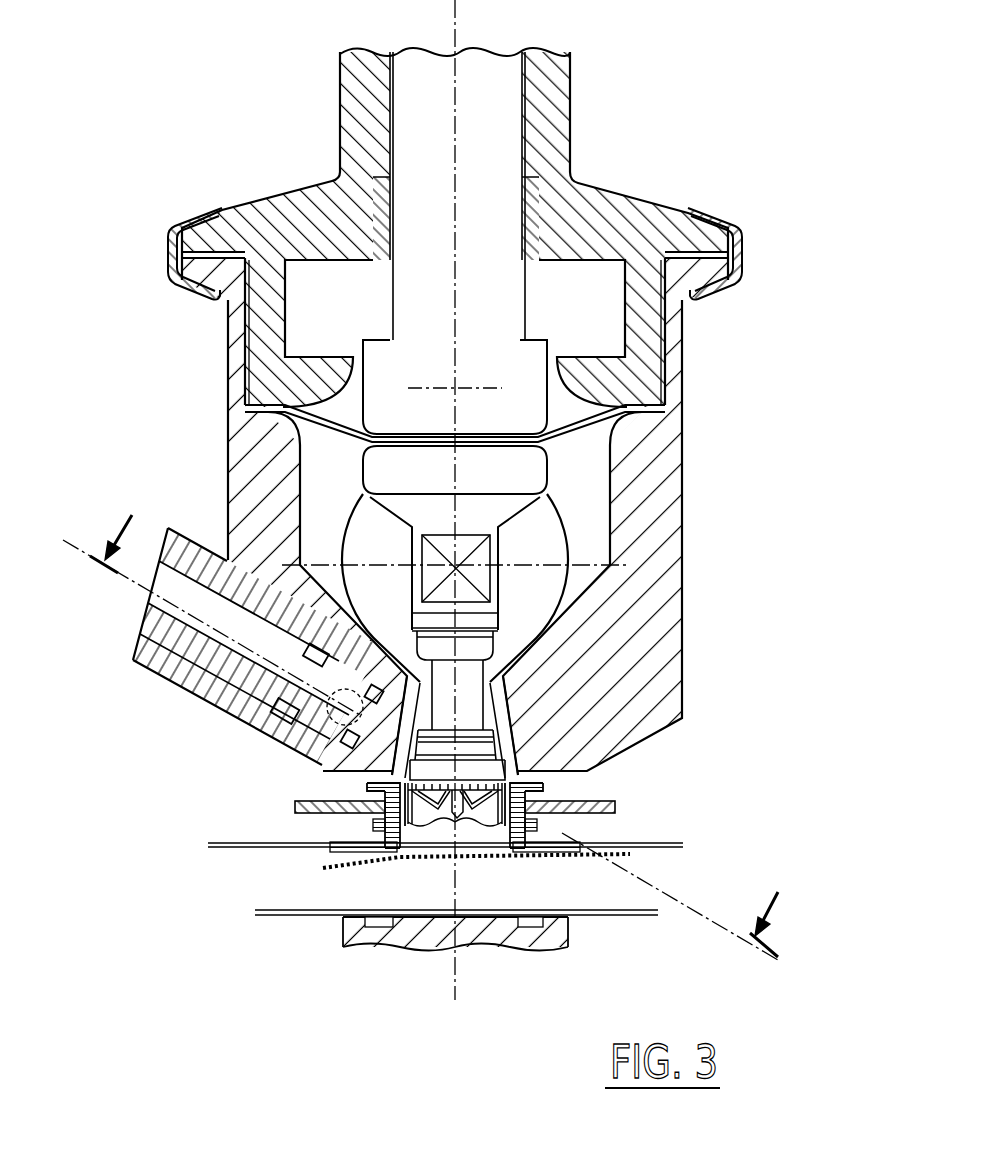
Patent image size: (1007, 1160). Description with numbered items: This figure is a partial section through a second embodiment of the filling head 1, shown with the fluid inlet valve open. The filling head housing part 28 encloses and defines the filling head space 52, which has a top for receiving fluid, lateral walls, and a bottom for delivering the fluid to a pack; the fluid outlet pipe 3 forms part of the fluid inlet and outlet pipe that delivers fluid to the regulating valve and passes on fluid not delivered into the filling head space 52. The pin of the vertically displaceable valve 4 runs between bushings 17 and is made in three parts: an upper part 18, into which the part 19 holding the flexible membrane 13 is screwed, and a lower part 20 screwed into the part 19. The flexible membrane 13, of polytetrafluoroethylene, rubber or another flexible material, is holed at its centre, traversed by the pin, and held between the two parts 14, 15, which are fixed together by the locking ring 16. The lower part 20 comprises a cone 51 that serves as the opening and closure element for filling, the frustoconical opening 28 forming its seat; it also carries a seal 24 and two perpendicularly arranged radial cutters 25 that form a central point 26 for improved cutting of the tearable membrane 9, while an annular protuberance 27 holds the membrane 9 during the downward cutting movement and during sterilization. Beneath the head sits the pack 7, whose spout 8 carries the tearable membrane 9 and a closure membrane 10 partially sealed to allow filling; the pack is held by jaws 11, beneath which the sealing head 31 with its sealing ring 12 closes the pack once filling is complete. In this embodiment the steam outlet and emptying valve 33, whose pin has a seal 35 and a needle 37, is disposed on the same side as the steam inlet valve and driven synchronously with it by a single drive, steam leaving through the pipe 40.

The filling head 1 is at (702, 455).
The fluid outlet pipe 3 is at (455, 588).
The valve 4 is at (506, 545).
The pack 7 is at (620, 912).
The spout 8 is at (546, 826).
The tearable membrane 9 is at (410, 826).
The closure membrane 10 is at (326, 868).
The jaws 11 is at (621, 804).
The sealing ring 12 is at (533, 923).
The flexible membrane 13 is at (318, 428).
The filling head part 14 is at (607, 203).
The filling head part 15 is at (680, 330).
The locking ring 16 is at (722, 218).
The bushings 17 is at (528, 200).
The upper part of pin 18 is at (483, 100).
The membrane holding part 19 is at (536, 478).
The lower part of pin 20 is at (482, 647).
The seal 24 is at (485, 752).
The radial cutters 25 is at (423, 805).
The central point 26 is at (458, 814).
The annular protuberance 27 is at (515, 775).
The opening 28 is at (497, 706).
The sealing head 31 is at (392, 932).
The steam outlet and emptying valve 33 is at (290, 708).
The seal 35 is at (400, 772).
The needle 37 is at (390, 790).
The steam outlet pipe 40 is at (340, 748).
The cone 51 is at (457, 770).
The filling head space 52 is at (414, 695).